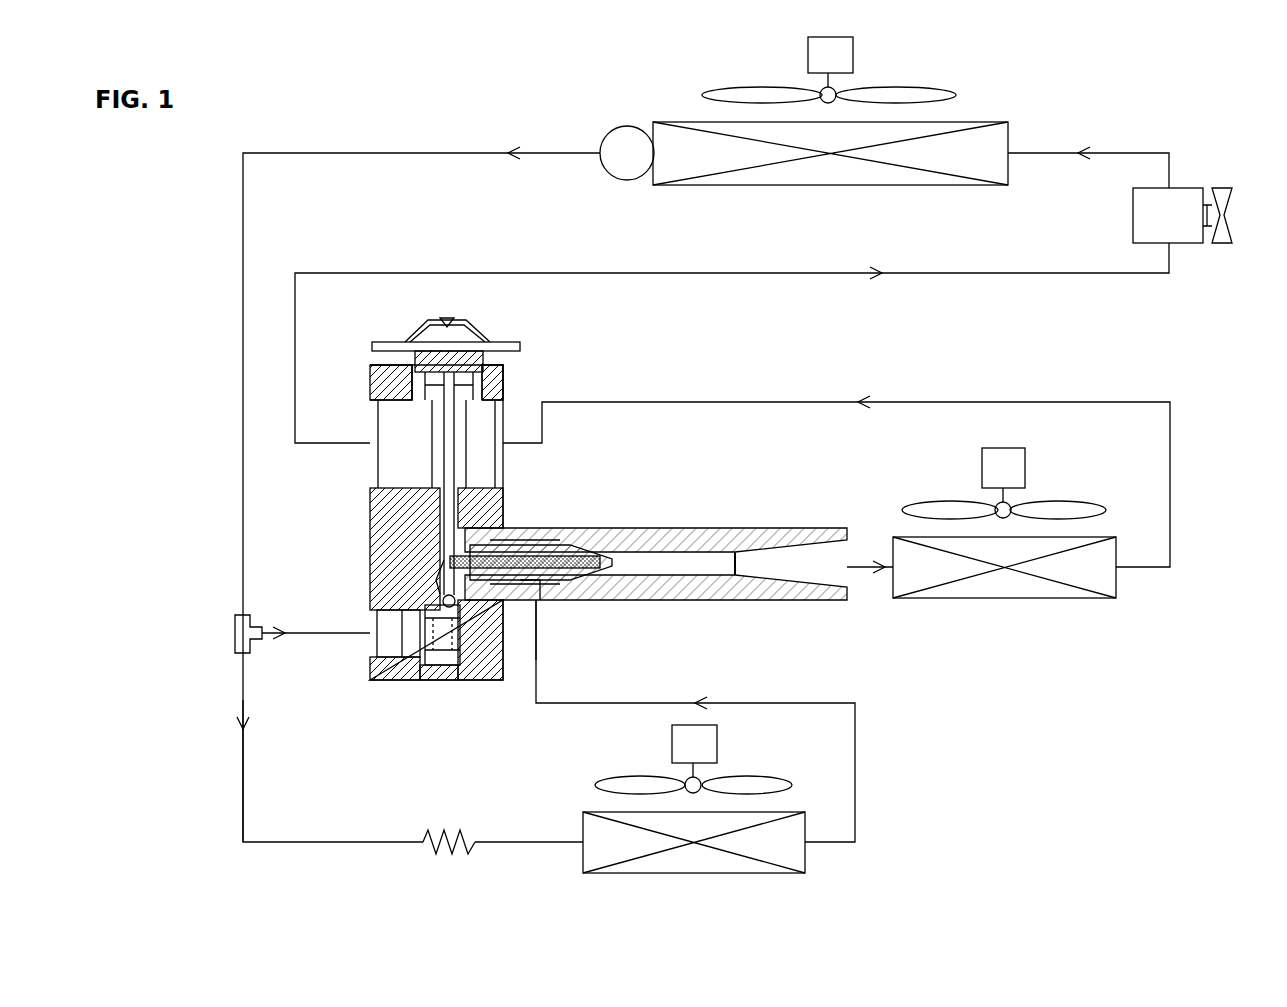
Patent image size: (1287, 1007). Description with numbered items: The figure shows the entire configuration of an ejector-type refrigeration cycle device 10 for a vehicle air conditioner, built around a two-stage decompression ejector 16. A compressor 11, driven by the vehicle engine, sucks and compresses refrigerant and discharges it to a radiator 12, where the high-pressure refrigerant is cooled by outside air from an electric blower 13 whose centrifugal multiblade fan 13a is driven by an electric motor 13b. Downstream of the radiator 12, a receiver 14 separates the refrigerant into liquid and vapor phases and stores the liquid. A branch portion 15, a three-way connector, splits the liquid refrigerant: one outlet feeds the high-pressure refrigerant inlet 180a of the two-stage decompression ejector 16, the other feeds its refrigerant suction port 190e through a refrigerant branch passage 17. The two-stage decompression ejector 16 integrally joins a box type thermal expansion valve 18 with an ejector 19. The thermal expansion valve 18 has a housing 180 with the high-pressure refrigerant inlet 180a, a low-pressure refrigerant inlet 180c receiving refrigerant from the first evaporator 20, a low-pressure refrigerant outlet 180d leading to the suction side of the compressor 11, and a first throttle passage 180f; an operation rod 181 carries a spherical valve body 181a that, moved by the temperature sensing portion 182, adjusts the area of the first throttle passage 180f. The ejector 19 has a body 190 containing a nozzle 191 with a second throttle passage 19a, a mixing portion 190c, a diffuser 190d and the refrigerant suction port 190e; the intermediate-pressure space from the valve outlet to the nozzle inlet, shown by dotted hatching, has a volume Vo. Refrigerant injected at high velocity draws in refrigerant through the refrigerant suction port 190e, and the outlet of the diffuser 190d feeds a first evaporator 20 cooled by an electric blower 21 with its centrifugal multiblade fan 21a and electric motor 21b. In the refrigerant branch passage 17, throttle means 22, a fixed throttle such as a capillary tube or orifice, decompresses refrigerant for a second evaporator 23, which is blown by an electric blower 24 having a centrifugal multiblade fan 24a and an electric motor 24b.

The ejector-type refrigeration cycle device 10 is at (1125, 131).
The compressor 11 is at (1182, 188).
The radiator 12 is at (937, 185).
The electric blower 13 is at (854, 70).
The centrifugal multiblade fan 13a is at (940, 92).
The electric motor 13b is at (808, 68).
The receiver 14 is at (608, 126).
The branch portion 15 is at (235, 633).
The two-stage decompression ejector 16 is at (562, 543).
The refrigerant branch passage 17 is at (243, 792).
The thermal expansion valve 18 is at (447, 525).
The ejector 19 is at (648, 591).
The second throttle passage 19a is at (578, 552).
The first evaporator 20 is at (1081, 598).
The electric blower 21 is at (981, 476).
The centrifugal multiblade fan 21a is at (948, 503).
The electric motor 21b is at (982, 462).
The throttle means 22 is at (425, 850).
The second evaporator 23 is at (808, 870).
The electric blower 24 is at (669, 760).
The centrifugal multiblade fan 24a is at (605, 783).
The electric motor 24b is at (672, 745).
The housing 180 is at (447, 531).
The high-pressure refrigerant inlet 180a is at (375, 650).
The low-pressure refrigerant inlet 180c is at (505, 400).
The low-pressure refrigerant outlet 180d is at (372, 400).
The first throttle passage 180f is at (422, 622).
The operation rod 181 is at (384, 563).
The valve body 181a is at (449, 608).
The temperature sensing portion 182 is at (470, 333).
The body 190 is at (656, 571).
The mixing portion 190c is at (675, 577).
The diffuser 190d is at (782, 579).
The refrigerant suction port 190e is at (549, 602).
The nozzle 191 is at (563, 600).
The intermediate-pressure space volume Vo is at (511, 659).